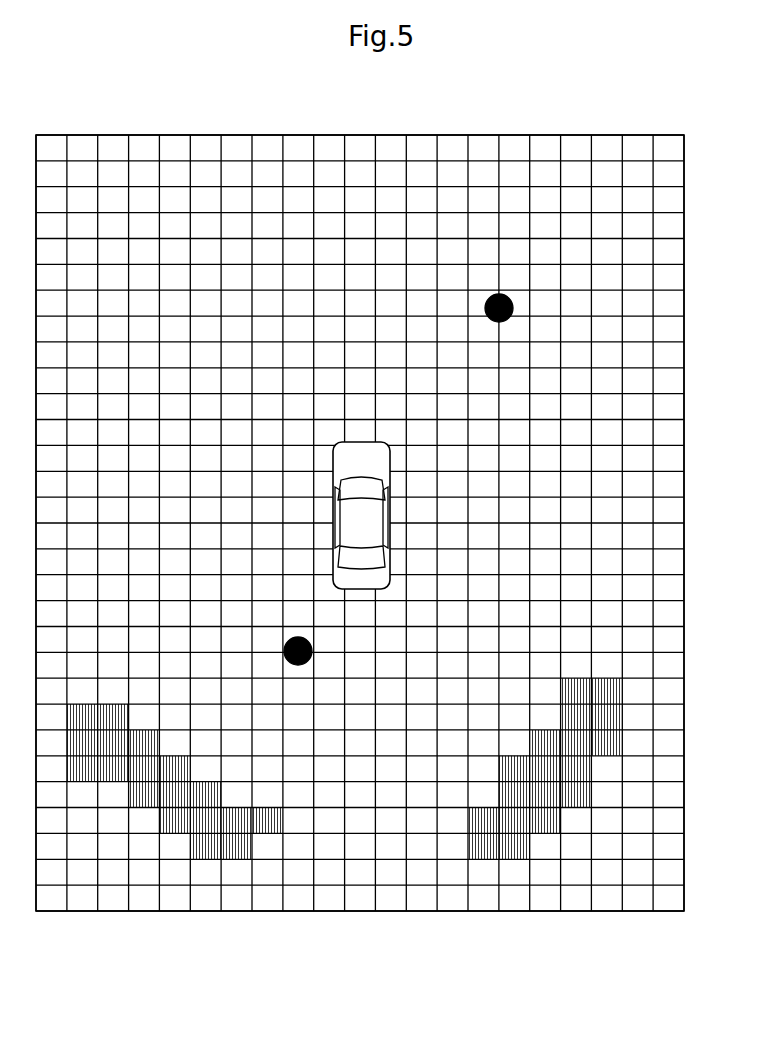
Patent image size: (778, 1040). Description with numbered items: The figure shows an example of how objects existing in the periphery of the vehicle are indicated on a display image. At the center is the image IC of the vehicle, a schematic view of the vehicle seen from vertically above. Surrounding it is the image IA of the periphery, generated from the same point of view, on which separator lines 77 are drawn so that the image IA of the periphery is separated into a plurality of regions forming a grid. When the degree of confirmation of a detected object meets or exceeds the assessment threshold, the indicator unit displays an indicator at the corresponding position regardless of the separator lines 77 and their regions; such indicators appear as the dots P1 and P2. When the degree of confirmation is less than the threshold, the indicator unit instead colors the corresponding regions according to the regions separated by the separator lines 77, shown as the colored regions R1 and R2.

The separator lines 77 is at (640, 160).
The image of the periphery IA is at (607, 898).
The image of the vehicle IC is at (390, 510).
The indicator P1 is at (512, 305).
The indicator P2 is at (284, 647).
The colored region R1 is at (615, 718).
The colored region R2 is at (235, 855).